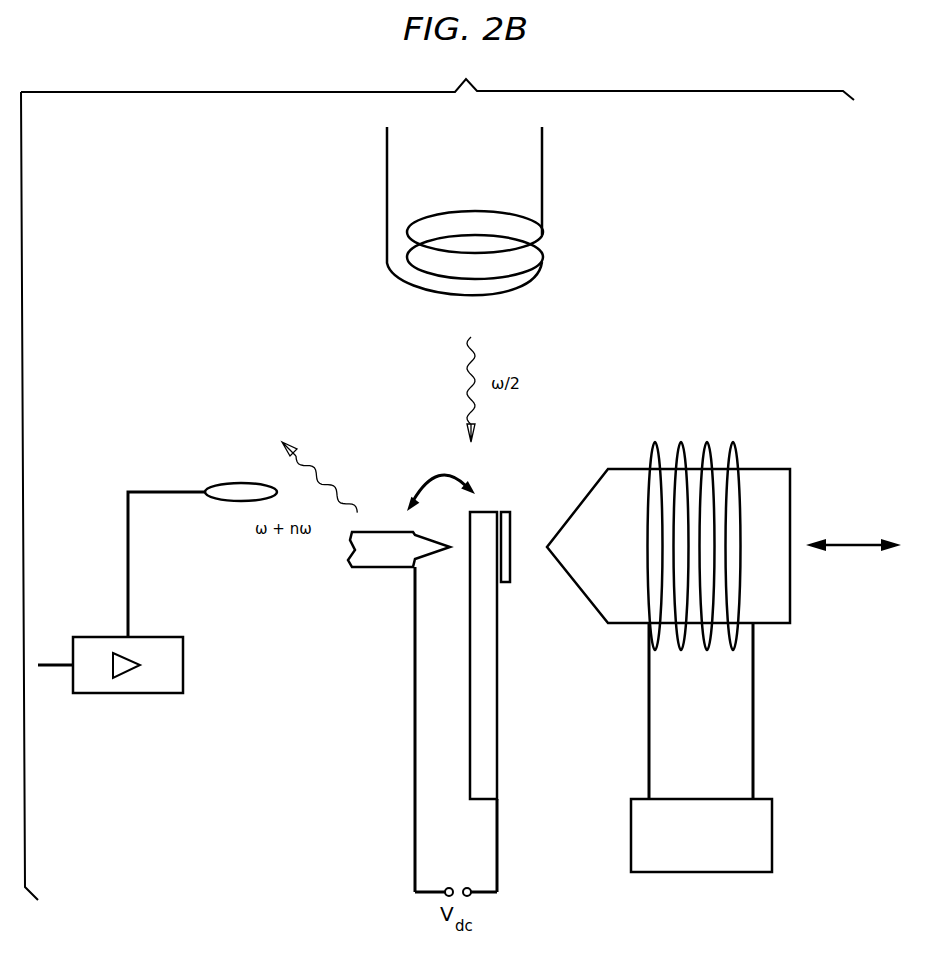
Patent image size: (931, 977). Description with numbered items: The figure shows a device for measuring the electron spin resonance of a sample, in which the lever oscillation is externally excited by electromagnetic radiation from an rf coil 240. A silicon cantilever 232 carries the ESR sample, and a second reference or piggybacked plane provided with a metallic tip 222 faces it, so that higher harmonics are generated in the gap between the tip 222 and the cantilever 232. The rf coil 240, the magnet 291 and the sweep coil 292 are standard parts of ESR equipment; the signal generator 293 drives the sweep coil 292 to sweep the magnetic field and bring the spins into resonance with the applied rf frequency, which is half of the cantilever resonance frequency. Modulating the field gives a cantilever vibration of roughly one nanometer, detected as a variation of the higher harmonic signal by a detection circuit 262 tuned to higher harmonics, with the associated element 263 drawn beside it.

The rf coil 240 is at (545, 150).
The metallic tip 222 is at (372, 569).
The cantilever 232 is at (497, 680).
The detection circuit 262 is at (153, 694).
The detector lens 263 is at (224, 483).
The magnet 291 is at (790, 493).
The sweep coil 292 is at (680, 650).
The signal generator 293 is at (693, 873).